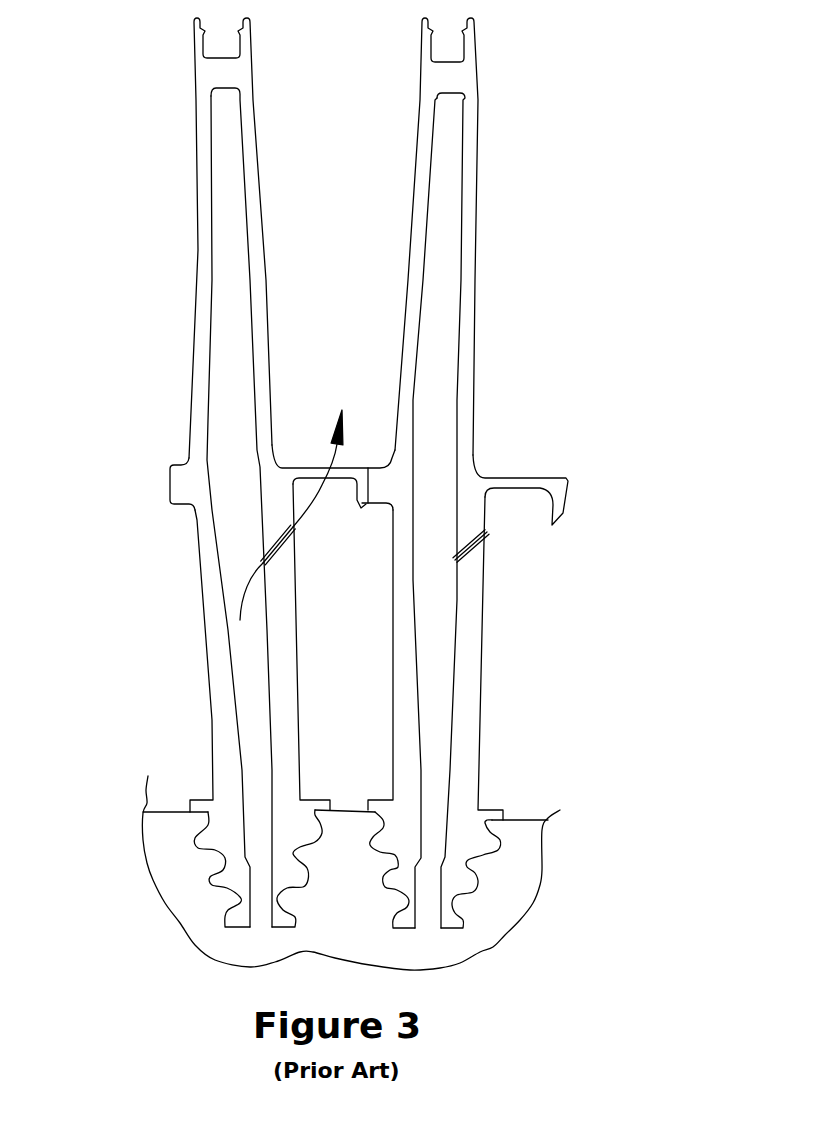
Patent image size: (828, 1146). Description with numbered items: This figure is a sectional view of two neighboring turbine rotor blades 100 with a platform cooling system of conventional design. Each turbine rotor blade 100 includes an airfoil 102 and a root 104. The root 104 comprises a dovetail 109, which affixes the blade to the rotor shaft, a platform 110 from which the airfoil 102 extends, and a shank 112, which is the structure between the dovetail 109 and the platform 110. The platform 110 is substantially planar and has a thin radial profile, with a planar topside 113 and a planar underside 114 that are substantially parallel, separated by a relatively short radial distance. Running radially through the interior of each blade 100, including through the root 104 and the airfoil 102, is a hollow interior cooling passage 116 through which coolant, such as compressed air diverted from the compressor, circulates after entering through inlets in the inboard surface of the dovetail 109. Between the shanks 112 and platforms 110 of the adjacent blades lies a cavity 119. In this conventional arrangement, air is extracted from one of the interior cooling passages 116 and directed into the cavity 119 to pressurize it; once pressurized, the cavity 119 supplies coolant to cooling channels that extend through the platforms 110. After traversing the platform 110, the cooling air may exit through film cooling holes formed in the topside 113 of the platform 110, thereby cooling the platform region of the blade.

The turbine rotor blade 100 is at (297, 215).
The airfoil 102 is at (198, 297).
The root 104 is at (596, 725).
The dovetail 109 is at (467, 885).
The platform 110 is at (323, 468).
The shank 112 is at (148, 686).
The topside of the platform 113 is at (352, 468).
The underside of the platform 114 is at (338, 480).
The interior cooling passage 116 is at (230, 530).
The cavity 119 is at (367, 642).